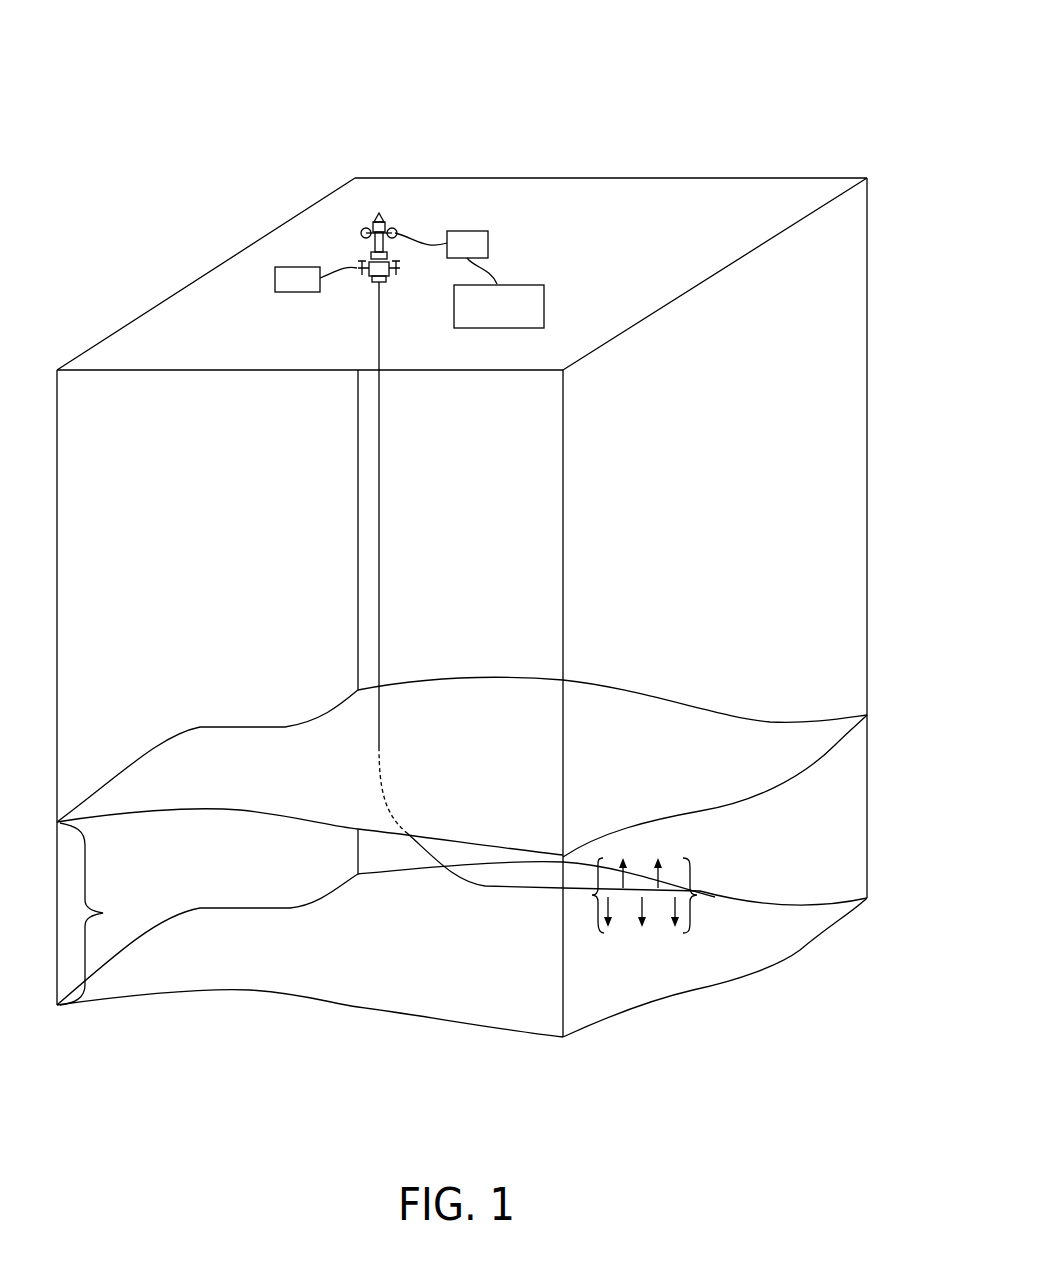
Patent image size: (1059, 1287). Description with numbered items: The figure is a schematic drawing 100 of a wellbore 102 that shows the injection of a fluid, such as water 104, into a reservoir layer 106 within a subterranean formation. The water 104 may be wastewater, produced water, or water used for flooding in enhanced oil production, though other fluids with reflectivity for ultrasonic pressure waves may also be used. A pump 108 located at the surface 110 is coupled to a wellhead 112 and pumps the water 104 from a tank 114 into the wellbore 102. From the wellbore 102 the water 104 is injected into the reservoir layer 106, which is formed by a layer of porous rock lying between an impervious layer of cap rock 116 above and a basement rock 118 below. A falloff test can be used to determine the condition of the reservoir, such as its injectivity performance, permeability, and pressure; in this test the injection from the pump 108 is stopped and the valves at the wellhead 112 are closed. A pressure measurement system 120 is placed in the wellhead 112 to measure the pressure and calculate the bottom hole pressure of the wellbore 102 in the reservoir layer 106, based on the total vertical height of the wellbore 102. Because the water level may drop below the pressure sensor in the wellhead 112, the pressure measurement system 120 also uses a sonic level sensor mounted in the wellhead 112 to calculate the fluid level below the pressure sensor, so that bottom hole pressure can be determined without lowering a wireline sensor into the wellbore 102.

The schematic drawing 100 is at (722, 72).
The wellbore 102 is at (382, 548).
The water 104 is at (703, 893).
The reservoir layer 106 is at (107, 914).
The pump 108 is at (490, 242).
The surface 110 is at (226, 290).
The wellhead 112 is at (368, 222).
The tank 114 is at (547, 305).
The cap rock 116 is at (698, 722).
The basement rock 118 is at (353, 1012).
The pressure measurement system 120 is at (288, 294).